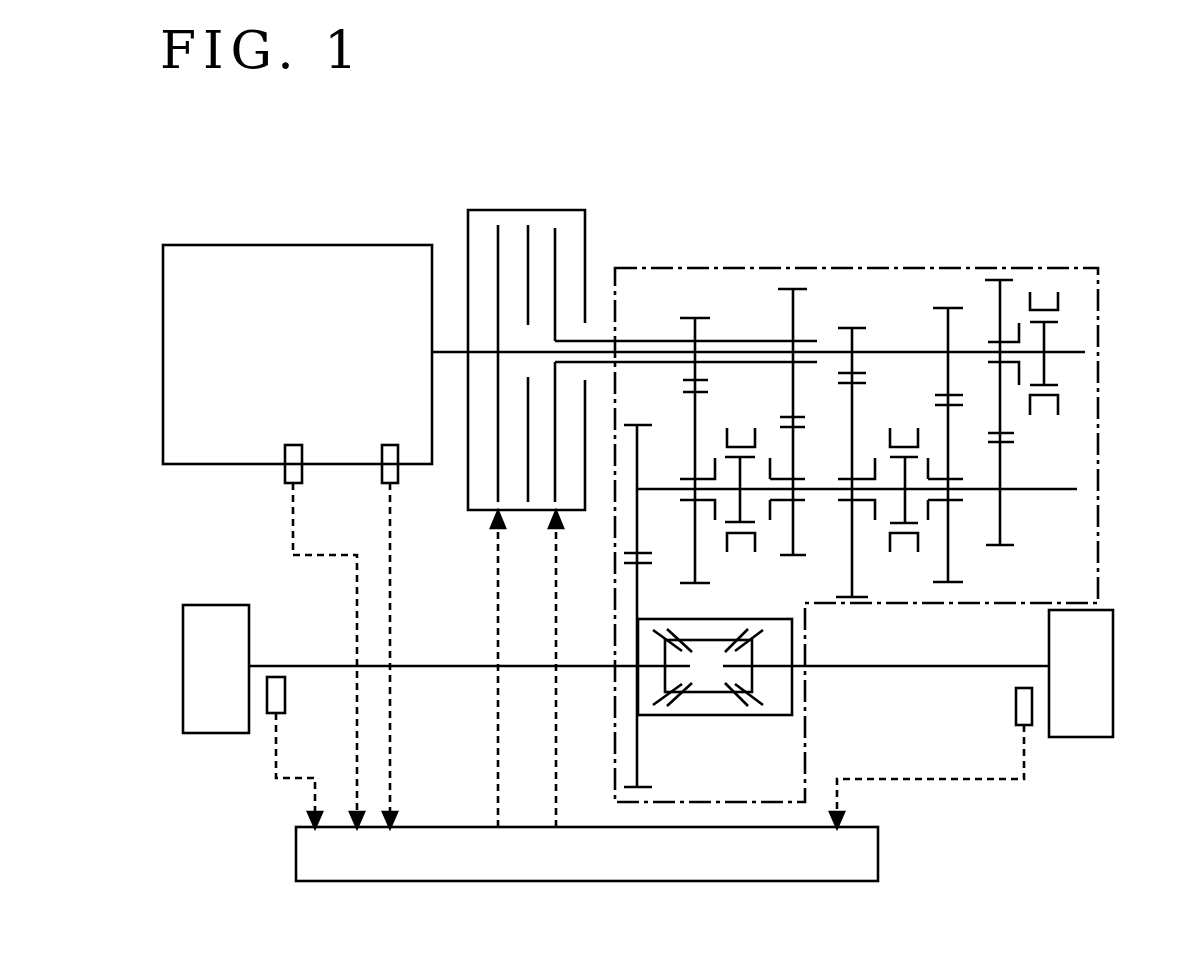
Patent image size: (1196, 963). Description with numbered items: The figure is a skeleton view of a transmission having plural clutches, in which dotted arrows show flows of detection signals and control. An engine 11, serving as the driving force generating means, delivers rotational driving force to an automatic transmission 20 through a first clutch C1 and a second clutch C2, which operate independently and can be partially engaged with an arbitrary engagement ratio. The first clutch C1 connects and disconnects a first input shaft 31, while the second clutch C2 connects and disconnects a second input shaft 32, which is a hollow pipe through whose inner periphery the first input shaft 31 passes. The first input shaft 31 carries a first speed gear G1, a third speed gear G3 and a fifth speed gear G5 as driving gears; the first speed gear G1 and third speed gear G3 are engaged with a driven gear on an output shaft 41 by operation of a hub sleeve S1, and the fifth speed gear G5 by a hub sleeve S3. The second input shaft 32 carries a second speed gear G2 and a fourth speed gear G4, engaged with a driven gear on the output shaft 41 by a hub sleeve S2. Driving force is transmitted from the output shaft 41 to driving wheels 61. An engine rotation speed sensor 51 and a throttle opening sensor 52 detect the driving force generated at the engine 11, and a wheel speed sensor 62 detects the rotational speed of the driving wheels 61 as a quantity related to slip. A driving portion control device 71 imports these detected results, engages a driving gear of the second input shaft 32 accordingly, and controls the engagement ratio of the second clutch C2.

The engine 11 is at (297, 256).
The first clutch C1 is at (512, 215).
The second clutch C2 is at (571, 215).
The automatic transmission 20 is at (640, 268).
The first input shaft 31 is at (1077, 352).
The second input shaft 32 is at (803, 342).
The output shaft 41 is at (1077, 489).
The first speed gear G1 is at (857, 327).
The second speed gear G2 is at (700, 318).
The third speed gear G3 is at (952, 308).
The fourth speed gear G4 is at (797, 290).
The fifth speed gear G5 is at (1008, 278).
The hub sleeve S1 is at (900, 430).
The hub sleeve S2 is at (738, 430).
The hub sleeve S3 is at (1045, 300).
The engine rotation speed sensor 51 is at (290, 472).
The throttle opening sensor 52 is at (385, 472).
The driving wheels 61 is at (207, 618).
The wheel speed sensor 62 is at (275, 715).
The driving portion control device 71 is at (858, 856).